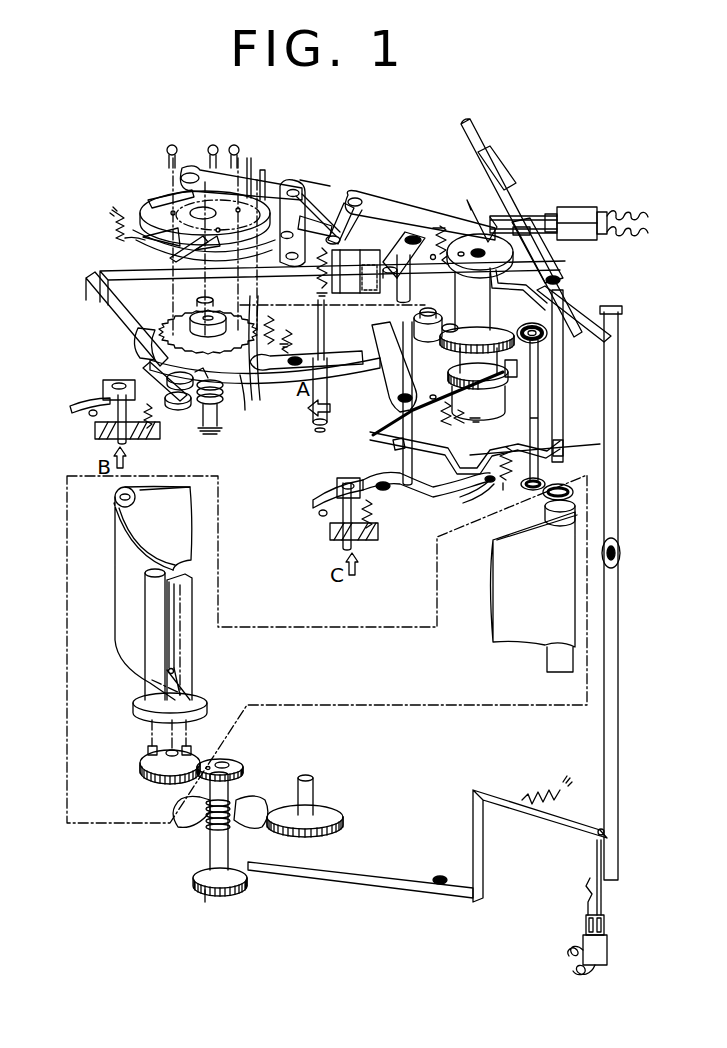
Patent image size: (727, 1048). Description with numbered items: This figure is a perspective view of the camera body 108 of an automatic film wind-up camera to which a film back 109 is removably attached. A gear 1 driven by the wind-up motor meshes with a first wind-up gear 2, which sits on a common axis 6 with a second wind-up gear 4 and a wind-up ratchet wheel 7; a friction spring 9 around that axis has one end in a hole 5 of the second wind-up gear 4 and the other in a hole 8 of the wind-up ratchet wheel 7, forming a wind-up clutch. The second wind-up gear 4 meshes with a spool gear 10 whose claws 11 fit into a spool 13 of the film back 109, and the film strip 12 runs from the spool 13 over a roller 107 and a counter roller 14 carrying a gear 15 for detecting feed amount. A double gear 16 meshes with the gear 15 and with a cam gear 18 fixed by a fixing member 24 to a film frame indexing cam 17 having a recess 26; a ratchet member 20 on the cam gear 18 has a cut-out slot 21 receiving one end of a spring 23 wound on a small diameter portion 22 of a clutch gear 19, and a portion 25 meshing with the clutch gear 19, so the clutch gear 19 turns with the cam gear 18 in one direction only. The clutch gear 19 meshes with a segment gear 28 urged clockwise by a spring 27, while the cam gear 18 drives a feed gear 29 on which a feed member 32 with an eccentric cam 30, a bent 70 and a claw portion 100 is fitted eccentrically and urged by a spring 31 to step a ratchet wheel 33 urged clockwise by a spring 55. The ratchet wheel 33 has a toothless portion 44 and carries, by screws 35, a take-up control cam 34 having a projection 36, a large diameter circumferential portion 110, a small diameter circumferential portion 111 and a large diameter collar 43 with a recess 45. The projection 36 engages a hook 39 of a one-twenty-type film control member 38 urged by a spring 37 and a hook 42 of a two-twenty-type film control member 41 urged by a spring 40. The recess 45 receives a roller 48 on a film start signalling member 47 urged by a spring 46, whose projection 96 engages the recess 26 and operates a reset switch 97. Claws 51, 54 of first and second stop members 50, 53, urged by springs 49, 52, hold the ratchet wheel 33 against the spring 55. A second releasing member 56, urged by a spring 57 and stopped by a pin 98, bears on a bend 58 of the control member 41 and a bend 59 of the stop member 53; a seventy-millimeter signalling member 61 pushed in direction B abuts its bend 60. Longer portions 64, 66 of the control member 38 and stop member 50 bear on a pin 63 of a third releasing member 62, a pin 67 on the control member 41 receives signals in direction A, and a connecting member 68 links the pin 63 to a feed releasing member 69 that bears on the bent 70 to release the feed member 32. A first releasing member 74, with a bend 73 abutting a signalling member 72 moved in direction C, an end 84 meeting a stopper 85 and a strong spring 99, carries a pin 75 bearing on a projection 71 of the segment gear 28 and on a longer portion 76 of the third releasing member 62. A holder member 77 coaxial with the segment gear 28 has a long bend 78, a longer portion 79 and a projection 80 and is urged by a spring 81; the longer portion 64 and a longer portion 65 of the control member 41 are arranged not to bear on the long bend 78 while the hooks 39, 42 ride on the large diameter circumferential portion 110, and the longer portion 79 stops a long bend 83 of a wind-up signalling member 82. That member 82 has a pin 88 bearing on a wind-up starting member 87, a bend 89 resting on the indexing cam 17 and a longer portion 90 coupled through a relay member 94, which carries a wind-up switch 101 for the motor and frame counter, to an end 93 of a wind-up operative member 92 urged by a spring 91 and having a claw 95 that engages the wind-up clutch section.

The gear 1 is at (320, 812).
The first wind-up gear 2 is at (252, 806).
The second wind-up gear 4 is at (240, 765).
The hole 5 is at (226, 762).
The shaft 6 is at (210, 855).
The wind-up ratchet wheel 7 is at (236, 892).
The hole 8 is at (208, 893).
The friction spring 9 is at (216, 822).
The spool gear 10 is at (140, 772).
The claws 11 is at (148, 749).
The film strip 12 is at (192, 540).
The spool 13 is at (198, 703).
The counter roller 14 is at (577, 504).
The gear 15 is at (574, 490).
The double gear 16 is at (563, 396).
The film frame indexing cam 17 is at (472, 236).
The cam gear 18 is at (448, 324).
The clutch gear 19 is at (508, 380).
The ratchet member 20 is at (548, 340).
The cut-out slot 21 is at (580, 310).
The small diameter portion 22 is at (485, 254).
The spring 23 is at (540, 346).
The fixing member 24 is at (452, 344).
The portion 25 is at (531, 392).
The recess 26 is at (474, 212).
The spring 27 is at (468, 412).
The segment gear 28 is at (463, 418).
The feed gear 29 is at (427, 309).
The eccentric cam 30 is at (452, 379).
The spring 31 is at (270, 372).
The feed member 32 is at (342, 365).
The ratchet wheel 33 is at (245, 410).
The take-up control cam 34 is at (180, 203).
The screws 35 is at (172, 145).
The projection 36 is at (204, 292).
The spring 37 is at (333, 208).
The 120 film control member 38 is at (312, 212).
The hook 39 is at (200, 252).
The spring 40 is at (118, 220).
The 220 film control member 41 is at (112, 271).
The hook 42 is at (180, 258).
The large diameter collar 43 is at (124, 239).
The toothless portion 44 is at (170, 320).
The recess 45 is at (290, 188).
The spring 46 is at (443, 224).
The film start signalling member 47 is at (372, 196).
The roller 48 is at (310, 186).
The spring 49 is at (254, 392).
The first stop member 50 is at (314, 418).
The claw 51 is at (206, 392).
The spring 52 is at (158, 368).
The second stop member 53 is at (112, 380).
The claw 54 is at (140, 342).
The spring 55 is at (212, 428).
The second releasing member 56 is at (180, 406).
The spring 57 is at (147, 428).
The bend 58 is at (92, 287).
The bend 59 is at (179, 392).
The bend 60 is at (95, 401).
The 70 mm signalling member 61 is at (118, 440).
The third releasing member 62 is at (364, 210).
The pin 63 is at (326, 380).
The longer portion 64 is at (352, 250).
The longer portion 65 is at (412, 232).
The longer portion 66 is at (325, 412).
The pin 67 is at (318, 432).
The connecting member 68 is at (348, 196).
The feed releasing member 69 is at (249, 158).
The bent 70 is at (262, 170).
The projection 71 is at (396, 446).
The signalling member 72 is at (343, 540).
The bend 73 is at (337, 492).
The first releasing member 74 is at (426, 500).
The pin 75 is at (404, 470).
The longer portion 76 is at (416, 232).
The holder member 77 is at (438, 448).
The long bend 78 is at (378, 385).
The longer portion 79 is at (563, 442).
The projection 80 is at (485, 500).
The spring 81 is at (547, 470).
The wind-up signalling member 82 is at (560, 280).
The long bend 83 is at (600, 445).
The end 84 is at (312, 502).
The stopper 85 is at (321, 517).
The wind-up starting member 87 is at (505, 170).
The pin 88 is at (490, 160).
The bend 89 is at (558, 277).
The longer portion 90 is at (618, 315).
The spring 91 is at (538, 795).
The wind-up operative member 92 is at (558, 830).
The end 93 is at (606, 830).
The relay member 94 is at (620, 712).
The claw 95 is at (256, 870).
The projection 96 is at (518, 214).
The reset switch 97 is at (580, 207).
The pin 98 is at (90, 416).
The spring 99 is at (374, 512).
The claw portion 100 is at (286, 335).
The wind-up switch 101 is at (607, 946).
The roller 107 is at (136, 520).
The camera body 108 is at (362, 540).
The film back 109 is at (80, 656).
The large diameter circumferential portion 110 is at (198, 188).
The small diameter circumferential portion 111 is at (181, 176).